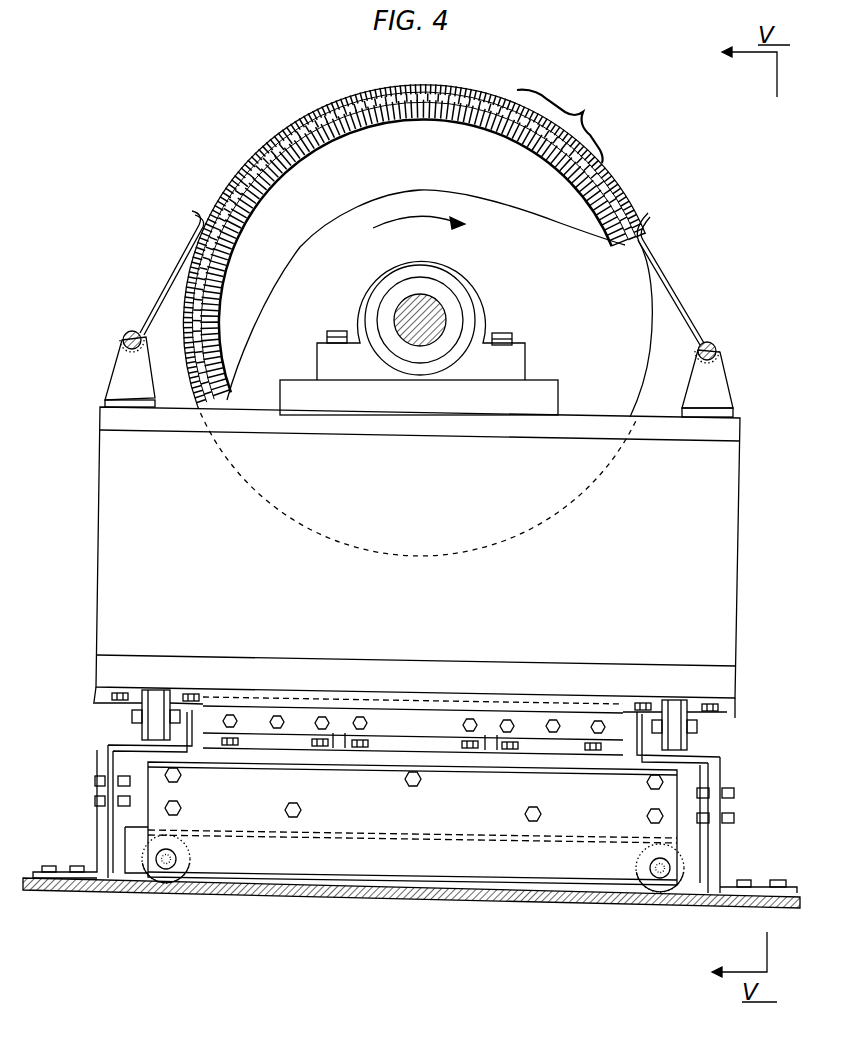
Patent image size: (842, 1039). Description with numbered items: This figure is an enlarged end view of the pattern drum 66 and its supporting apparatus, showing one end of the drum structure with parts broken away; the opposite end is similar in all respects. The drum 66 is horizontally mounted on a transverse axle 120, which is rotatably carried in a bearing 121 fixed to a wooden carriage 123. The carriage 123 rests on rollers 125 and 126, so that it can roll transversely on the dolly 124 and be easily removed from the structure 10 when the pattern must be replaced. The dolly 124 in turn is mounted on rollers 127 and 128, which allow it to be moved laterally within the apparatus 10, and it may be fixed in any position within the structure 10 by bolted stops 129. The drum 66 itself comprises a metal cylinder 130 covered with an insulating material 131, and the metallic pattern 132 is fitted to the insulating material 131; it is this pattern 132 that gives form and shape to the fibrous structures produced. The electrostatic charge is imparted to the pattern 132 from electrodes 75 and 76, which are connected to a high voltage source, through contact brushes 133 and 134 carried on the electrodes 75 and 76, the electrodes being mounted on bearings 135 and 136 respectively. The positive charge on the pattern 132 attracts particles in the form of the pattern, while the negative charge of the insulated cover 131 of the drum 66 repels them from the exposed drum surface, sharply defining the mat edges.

The structure 10 is at (522, 907).
The pattern drum 66 is at (563, 126).
The electrode 75 is at (125, 334).
The electrode 76 is at (715, 345).
The transverse axle 120 is at (428, 315).
The bearing 121 is at (377, 288).
The wooden carriage 123 is at (88, 415).
The dolly 124 is at (360, 860).
The roller 125 is at (152, 705).
The roller 126 is at (674, 722).
The roller 127 is at (166, 878).
The roller 128 is at (661, 885).
The bolted stops 129 is at (103, 848).
The cylinder 130 is at (425, 118).
The insulating material 131 is at (471, 90).
The metallic pattern 132 is at (290, 127).
The contact brush 133 is at (185, 225).
The contact brush 134 is at (650, 212).
The bearing 135 is at (120, 369).
The bearing 136 is at (712, 376).